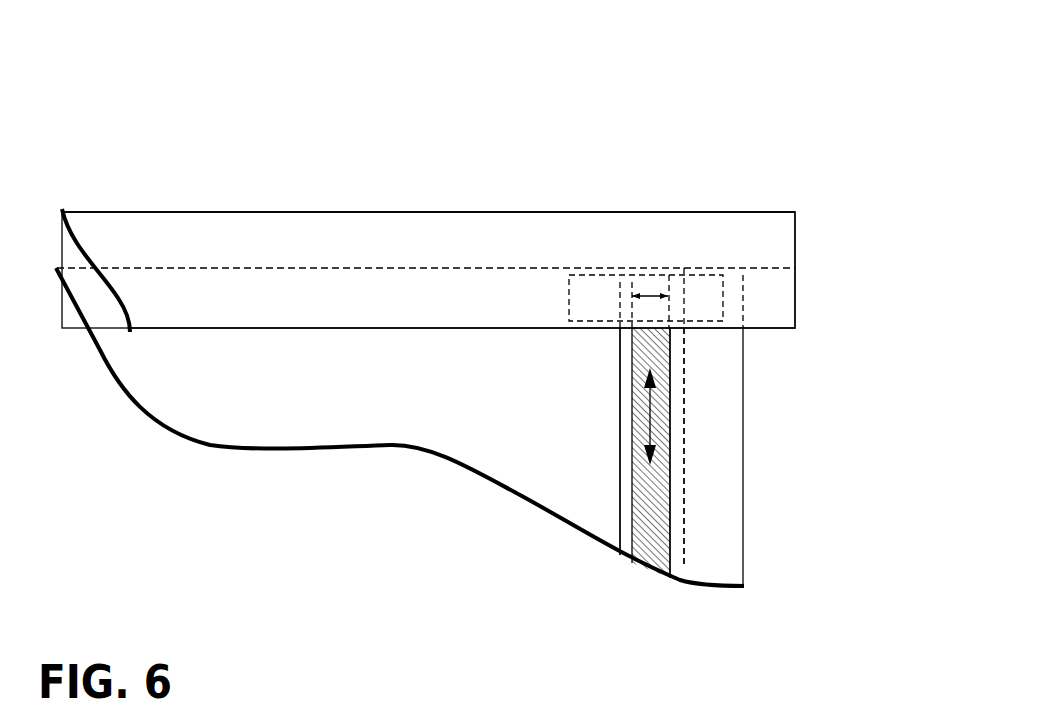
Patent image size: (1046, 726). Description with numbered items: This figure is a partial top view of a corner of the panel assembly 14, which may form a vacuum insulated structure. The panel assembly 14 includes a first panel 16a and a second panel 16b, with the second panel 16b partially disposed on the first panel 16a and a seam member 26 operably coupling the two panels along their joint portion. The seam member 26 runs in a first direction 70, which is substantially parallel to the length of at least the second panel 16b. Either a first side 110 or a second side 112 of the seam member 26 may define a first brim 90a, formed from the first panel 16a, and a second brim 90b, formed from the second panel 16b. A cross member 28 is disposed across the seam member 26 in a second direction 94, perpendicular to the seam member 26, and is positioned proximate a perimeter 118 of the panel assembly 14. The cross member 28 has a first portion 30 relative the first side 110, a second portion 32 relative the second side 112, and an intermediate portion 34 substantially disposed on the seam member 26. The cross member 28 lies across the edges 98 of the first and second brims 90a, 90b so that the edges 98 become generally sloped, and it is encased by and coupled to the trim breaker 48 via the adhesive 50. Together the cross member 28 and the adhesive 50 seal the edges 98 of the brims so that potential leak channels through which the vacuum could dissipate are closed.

The panel assembly 14 is at (787, 124).
The trim breaker 48 is at (185, 212).
The adhesive 50 is at (310, 247).
The perimeter 118 is at (370, 268).
The second portion 32 is at (598, 300).
The edges 98 is at (625, 268).
The second direction 94 is at (655, 262).
The intermediate portion 34 is at (667, 265).
The cross member 28 is at (690, 285).
The first portion 30 is at (745, 305).
The first direction 70 is at (670, 407).
The second brim 90b is at (684, 445).
The first panel 16a is at (710, 487).
The first side 110 is at (670, 502).
The seam member 26 is at (670, 538).
The second panel 16b is at (438, 400).
The second side 112 is at (632, 396).
The first brim 90a is at (620, 493).